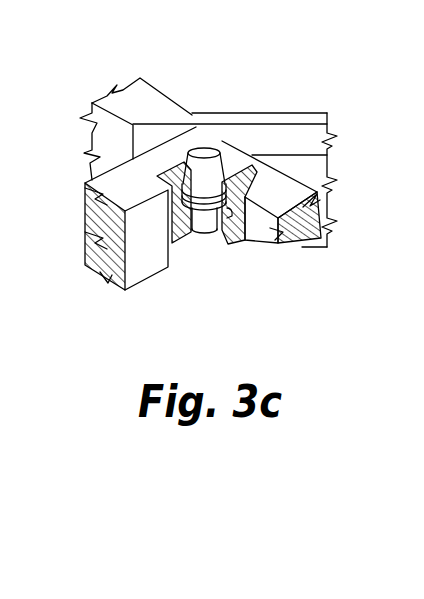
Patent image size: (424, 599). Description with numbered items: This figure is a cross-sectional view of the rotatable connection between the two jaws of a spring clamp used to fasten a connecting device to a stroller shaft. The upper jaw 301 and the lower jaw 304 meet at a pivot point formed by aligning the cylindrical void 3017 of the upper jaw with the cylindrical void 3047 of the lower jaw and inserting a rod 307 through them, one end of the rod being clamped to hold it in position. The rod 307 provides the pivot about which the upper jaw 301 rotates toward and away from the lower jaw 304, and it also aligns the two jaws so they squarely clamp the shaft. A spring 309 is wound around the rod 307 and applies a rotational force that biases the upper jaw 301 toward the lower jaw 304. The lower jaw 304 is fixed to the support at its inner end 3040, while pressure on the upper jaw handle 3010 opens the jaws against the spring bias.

The lower jaw 304 is at (93, 152).
The inner end 3040 is at (328, 171).
The upper jaw 301 is at (148, 266).
The upper jaw handle 3010 is at (283, 252).
The cylindrical void 3017 is at (202, 148).
The rod 307 is at (214, 140).
The spring 309 is at (236, 165).
The cylindrical void 3047 is at (207, 218).